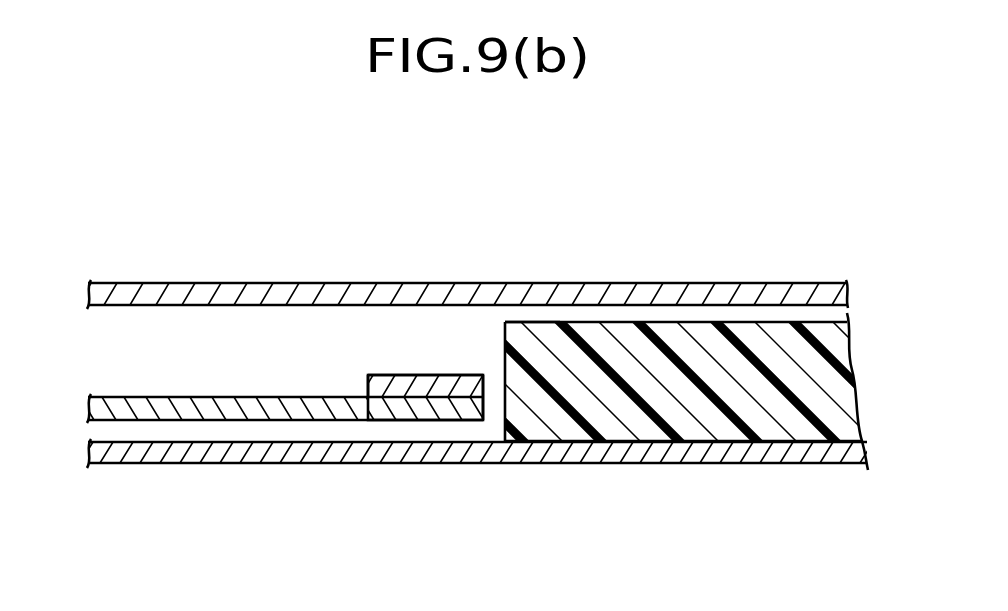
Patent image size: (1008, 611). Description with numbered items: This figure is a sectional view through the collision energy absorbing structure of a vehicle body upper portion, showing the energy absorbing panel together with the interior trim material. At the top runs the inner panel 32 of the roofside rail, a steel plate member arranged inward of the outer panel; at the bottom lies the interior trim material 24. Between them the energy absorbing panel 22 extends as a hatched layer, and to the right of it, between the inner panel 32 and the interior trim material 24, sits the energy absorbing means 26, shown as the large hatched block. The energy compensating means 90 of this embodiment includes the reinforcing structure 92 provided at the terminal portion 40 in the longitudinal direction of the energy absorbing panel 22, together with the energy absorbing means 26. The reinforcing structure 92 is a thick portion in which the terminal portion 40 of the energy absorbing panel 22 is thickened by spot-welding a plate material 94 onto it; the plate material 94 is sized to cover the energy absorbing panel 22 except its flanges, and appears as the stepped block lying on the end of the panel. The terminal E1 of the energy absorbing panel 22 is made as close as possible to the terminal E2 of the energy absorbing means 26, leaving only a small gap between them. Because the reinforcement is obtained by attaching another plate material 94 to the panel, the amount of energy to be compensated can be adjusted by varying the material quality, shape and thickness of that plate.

The energy absorbing panel 22 is at (243, 420).
The interior trim material 24 is at (715, 452).
The energy absorbing means 26 is at (687, 360).
The inner panel 32 is at (207, 288).
The terminal portion 40 is at (357, 405).
The energy compensating means 90 is at (507, 313).
The reinforcing structure 92 is at (436, 374).
The plate material 94 is at (412, 382).
The terminal of the energy absorbing panel E1 is at (483, 403).
The terminal of the energy absorbing means E2 is at (503, 360).